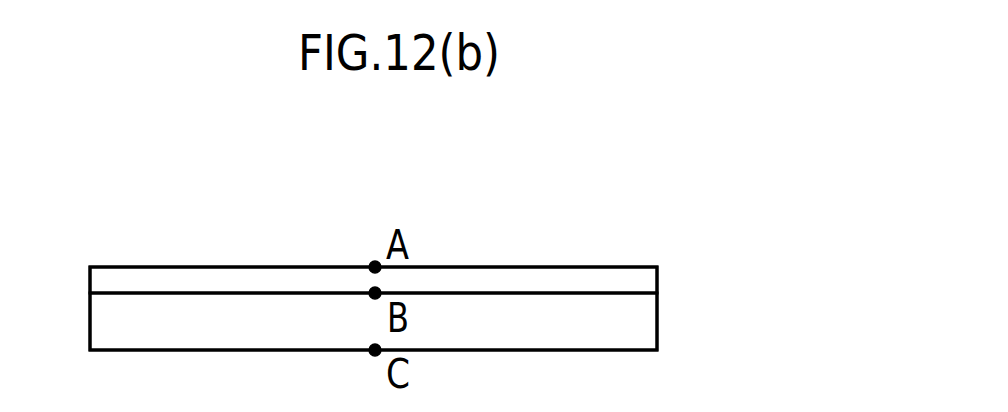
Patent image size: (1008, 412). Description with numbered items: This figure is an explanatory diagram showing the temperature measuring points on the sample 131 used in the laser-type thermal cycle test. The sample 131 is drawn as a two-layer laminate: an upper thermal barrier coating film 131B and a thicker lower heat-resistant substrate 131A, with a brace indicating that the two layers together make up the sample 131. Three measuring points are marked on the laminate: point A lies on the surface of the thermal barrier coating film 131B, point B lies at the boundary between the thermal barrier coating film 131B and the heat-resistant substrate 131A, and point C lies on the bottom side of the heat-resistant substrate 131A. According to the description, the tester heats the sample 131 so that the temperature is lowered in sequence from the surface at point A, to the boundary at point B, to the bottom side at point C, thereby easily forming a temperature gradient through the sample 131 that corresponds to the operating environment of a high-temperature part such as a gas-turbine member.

The sample 131 is at (820, 230).
The thermal barrier coating film 131B is at (642, 280).
The heat-resistant substrate 131A is at (642, 328).